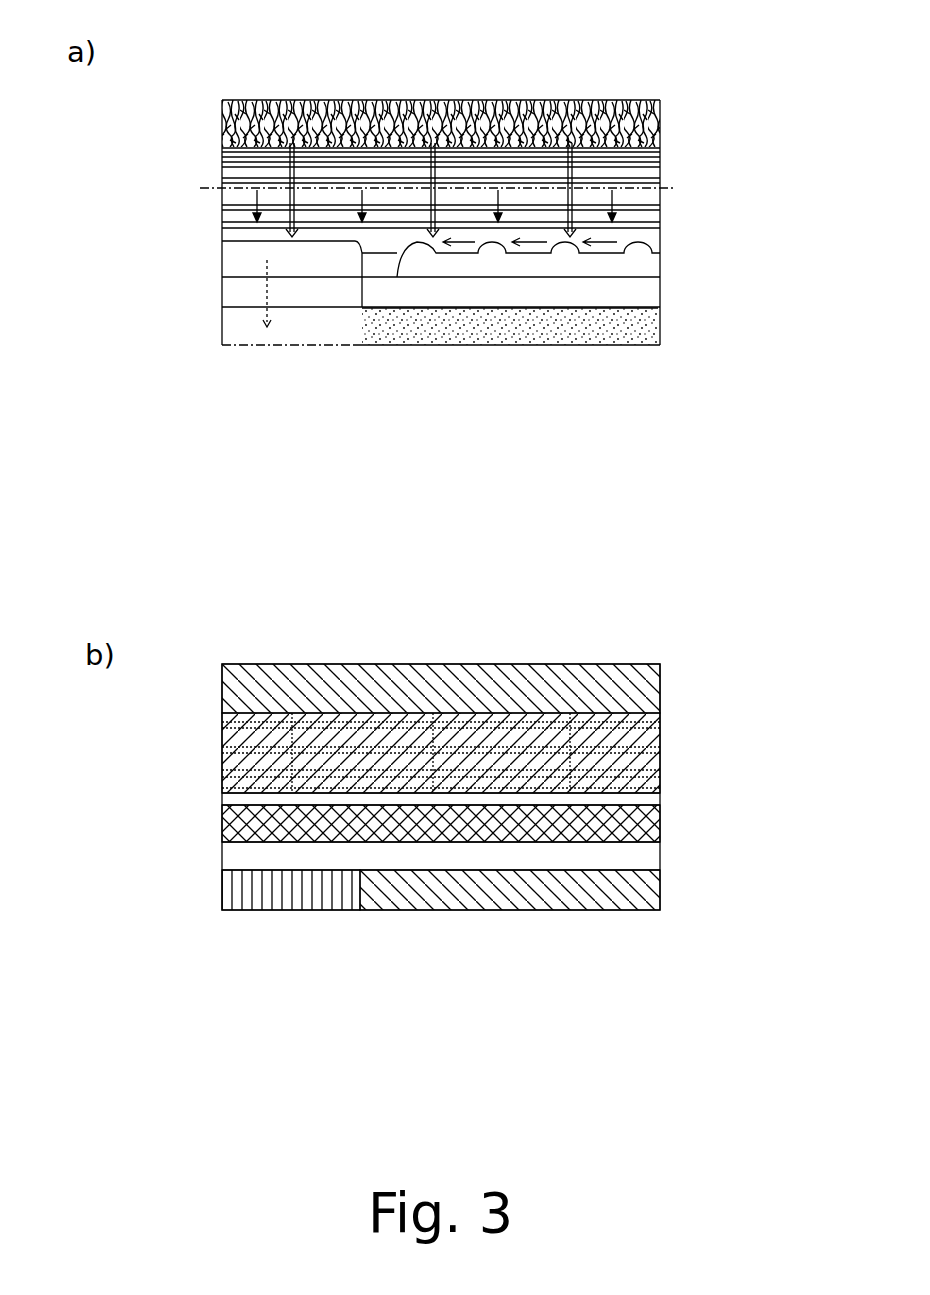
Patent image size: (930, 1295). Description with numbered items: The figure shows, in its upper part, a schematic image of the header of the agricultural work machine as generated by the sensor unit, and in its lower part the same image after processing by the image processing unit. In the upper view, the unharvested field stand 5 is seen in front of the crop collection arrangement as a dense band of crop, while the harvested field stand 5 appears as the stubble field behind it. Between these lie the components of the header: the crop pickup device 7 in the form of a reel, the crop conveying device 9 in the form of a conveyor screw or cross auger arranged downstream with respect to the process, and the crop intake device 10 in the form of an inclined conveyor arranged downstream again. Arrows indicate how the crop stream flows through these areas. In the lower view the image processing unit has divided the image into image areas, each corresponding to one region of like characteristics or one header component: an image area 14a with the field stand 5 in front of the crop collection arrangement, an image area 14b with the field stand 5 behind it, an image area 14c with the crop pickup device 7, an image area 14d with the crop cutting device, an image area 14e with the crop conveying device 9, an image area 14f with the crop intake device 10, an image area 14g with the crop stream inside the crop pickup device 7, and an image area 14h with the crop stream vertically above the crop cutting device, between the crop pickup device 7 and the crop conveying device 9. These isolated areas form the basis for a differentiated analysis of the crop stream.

The field stand 5 is at (515, 100).
The crop pickup device 7 is at (658, 223).
The crop intake device 10 is at (240, 241).
The crop conveying device 9 is at (652, 255).
The image area 14a is at (217, 665).
The image area 14b is at (360, 917).
The image area 14c is at (217, 714).
The image area 14d is at (200, 798).
The image area 14e is at (217, 806).
The image area 14f is at (360, 917).
The image area 14g is at (665, 797).
The image area 14h is at (665, 797).